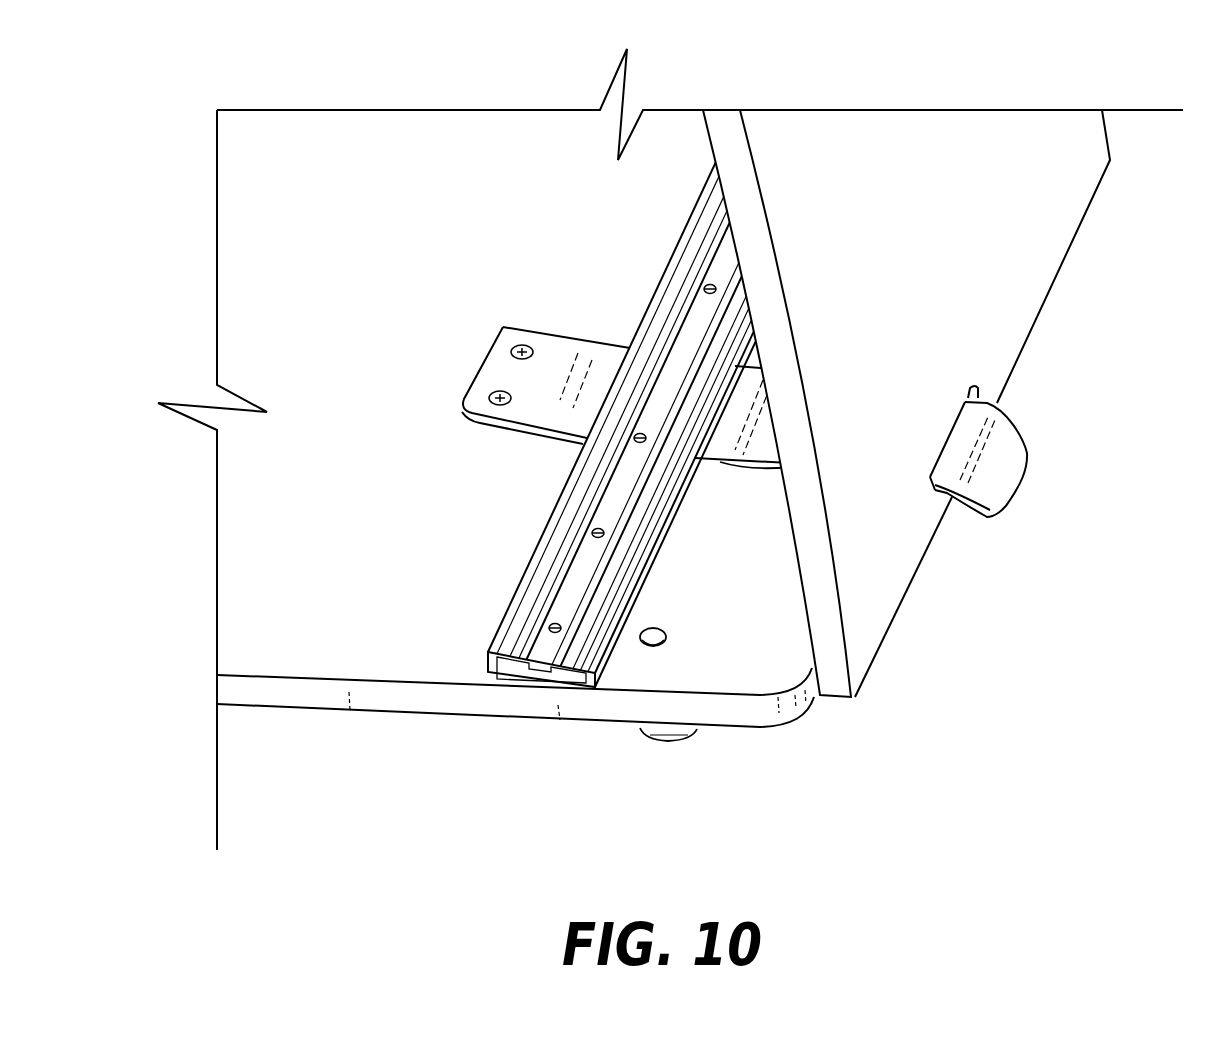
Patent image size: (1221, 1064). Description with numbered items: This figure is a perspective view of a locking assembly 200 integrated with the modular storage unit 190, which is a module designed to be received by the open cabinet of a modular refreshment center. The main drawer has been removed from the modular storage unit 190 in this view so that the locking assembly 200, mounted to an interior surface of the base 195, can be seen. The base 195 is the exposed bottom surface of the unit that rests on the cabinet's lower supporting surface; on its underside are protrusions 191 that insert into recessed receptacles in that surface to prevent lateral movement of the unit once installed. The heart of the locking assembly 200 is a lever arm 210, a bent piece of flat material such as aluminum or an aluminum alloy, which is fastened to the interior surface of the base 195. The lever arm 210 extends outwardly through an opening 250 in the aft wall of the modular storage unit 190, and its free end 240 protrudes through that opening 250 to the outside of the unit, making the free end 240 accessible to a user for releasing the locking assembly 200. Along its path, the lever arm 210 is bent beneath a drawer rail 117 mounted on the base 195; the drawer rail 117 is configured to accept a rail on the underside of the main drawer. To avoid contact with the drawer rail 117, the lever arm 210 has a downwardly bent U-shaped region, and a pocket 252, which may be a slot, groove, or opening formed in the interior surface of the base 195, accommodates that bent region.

The drawer rail 117 is at (520, 583).
The modular storage unit 190 is at (1013, 227).
The protrusion 191 is at (680, 740).
The base 195 is at (260, 568).
The locking assembly 200 is at (564, 346).
The lever arm 210 is at (503, 333).
The free end 240 is at (1014, 389).
The opening 250 is at (972, 352).
The pocket 252 is at (614, 327).